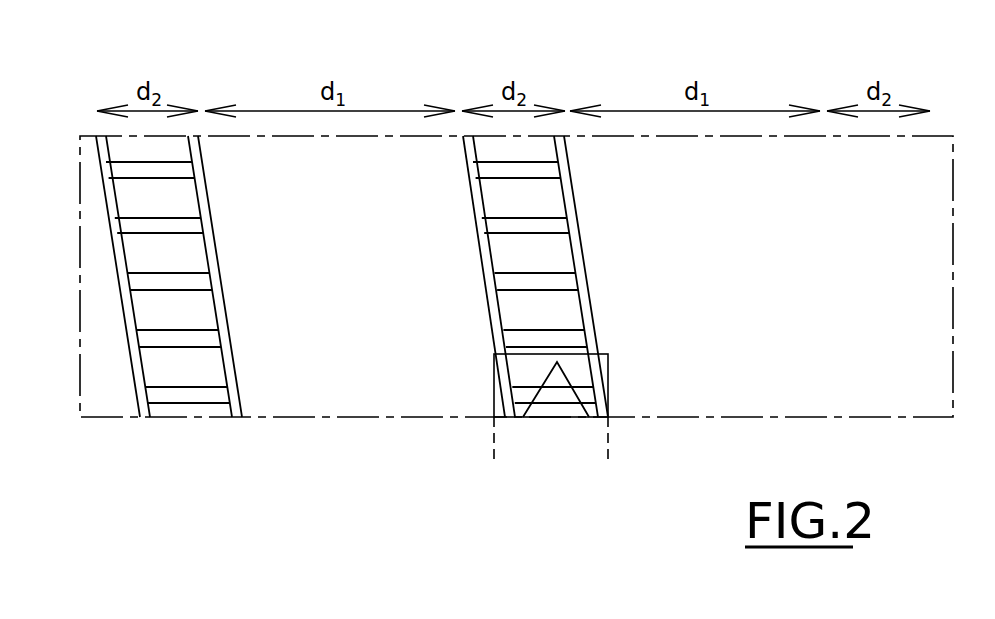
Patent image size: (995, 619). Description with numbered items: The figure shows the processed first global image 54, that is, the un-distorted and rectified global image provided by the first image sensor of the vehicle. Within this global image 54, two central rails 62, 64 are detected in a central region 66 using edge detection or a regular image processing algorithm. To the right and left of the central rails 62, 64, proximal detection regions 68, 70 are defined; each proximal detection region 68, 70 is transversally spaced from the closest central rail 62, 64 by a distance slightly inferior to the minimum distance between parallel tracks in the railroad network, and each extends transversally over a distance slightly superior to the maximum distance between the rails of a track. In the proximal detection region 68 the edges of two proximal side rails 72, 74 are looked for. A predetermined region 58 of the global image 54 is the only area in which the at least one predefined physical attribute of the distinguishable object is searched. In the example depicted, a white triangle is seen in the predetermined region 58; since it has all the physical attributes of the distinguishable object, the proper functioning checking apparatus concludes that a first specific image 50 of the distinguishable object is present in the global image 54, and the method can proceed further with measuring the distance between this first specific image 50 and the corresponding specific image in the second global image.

The processed first global image 54 is at (70, 120).
The proximal detection region 68 is at (250, 427).
The proximal side rail 72 is at (121, 256).
The proximal side rail 74 is at (203, 194).
The central region 66 is at (608, 470).
The central rail 62 is at (478, 195).
The central rail 64 is at (577, 243).
The predetermined region 58 is at (608, 370).
The first specific image 50 is at (561, 400).
The proximal detection region 70 is at (960, 427).